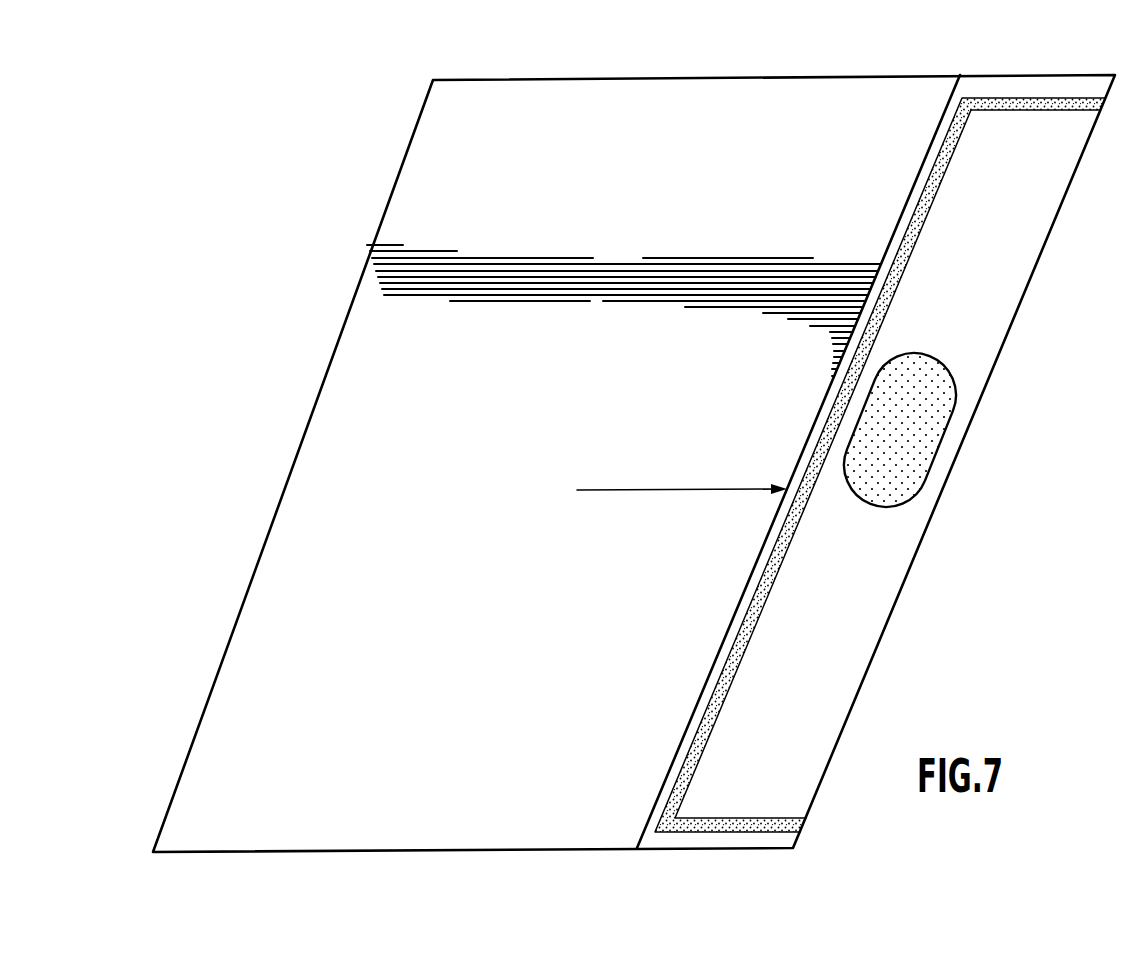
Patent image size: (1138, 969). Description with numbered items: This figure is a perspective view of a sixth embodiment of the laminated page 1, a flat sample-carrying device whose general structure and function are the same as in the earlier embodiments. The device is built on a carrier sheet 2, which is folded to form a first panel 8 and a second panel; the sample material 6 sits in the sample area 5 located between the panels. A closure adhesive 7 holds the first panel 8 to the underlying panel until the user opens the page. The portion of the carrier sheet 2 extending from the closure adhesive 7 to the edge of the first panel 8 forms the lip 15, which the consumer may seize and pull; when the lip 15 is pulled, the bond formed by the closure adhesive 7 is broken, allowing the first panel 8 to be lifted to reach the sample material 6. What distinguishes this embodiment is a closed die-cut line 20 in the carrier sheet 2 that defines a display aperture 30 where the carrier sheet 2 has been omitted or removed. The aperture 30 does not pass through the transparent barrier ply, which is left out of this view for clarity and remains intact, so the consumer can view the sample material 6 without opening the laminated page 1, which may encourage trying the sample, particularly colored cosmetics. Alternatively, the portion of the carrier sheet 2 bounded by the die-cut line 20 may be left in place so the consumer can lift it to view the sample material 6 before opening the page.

The laminated page 1 is at (343, 207).
The carrier sheet 2 is at (523, 88).
The sample area 5 is at (933, 435).
The sample material 6 is at (905, 493).
The closure adhesive 7 is at (795, 823).
The first panel 8 is at (960, 72).
The lip 15 is at (660, 802).
The closed die-cut line 20 is at (927, 477).
The display aperture 30 is at (953, 402).